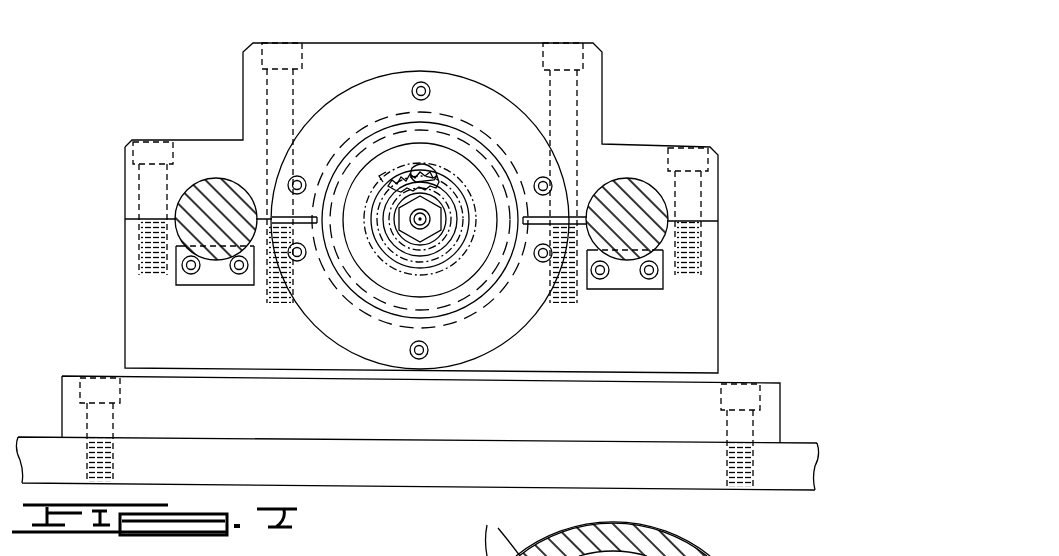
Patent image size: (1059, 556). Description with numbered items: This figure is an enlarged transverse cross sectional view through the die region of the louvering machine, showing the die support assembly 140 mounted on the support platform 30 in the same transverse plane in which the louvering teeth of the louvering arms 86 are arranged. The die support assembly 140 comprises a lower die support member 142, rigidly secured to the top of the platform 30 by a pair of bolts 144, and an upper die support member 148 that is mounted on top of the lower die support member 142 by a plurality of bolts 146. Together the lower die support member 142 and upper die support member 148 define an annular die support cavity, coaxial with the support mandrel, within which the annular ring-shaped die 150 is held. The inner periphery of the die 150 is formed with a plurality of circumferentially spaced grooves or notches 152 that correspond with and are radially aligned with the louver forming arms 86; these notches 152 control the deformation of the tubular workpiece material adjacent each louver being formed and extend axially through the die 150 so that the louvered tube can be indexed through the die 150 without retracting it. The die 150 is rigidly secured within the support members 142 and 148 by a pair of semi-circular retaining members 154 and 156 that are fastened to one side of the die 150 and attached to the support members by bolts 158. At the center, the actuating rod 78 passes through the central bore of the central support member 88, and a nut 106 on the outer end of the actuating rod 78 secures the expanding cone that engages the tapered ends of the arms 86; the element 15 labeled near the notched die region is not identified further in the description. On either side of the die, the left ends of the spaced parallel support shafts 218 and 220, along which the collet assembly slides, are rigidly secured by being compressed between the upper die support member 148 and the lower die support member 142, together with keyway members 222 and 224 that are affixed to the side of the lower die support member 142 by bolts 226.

The die support assembly 140 is at (418, 238).
The lower die support member 142 is at (123, 309).
The bolts 144 is at (102, 376).
The bolts 146 is at (154, 140).
The upper die support member 148 is at (604, 78).
The die 150 is at (441, 108).
The grooves or notches 152 is at (422, 170).
The semi-circular retaining member 154 is at (322, 336).
The semi-circular retaining member 156 is at (420, 178).
The bolts 158 is at (300, 177).
The shaft 15 is at (434, 166).
The actuating rod 78 is at (422, 230).
The nut 106 is at (412, 233).
The support shaft 218 is at (628, 176).
The support shaft 220 is at (216, 177).
The keyway member 222 is at (652, 291).
The keyway member 224 is at (177, 289).
The bolts 226 is at (192, 277).
The support platform 30 is at (42, 436).
The louvering arms 86 is at (600, 548).
The central support member 88 is at (652, 550).